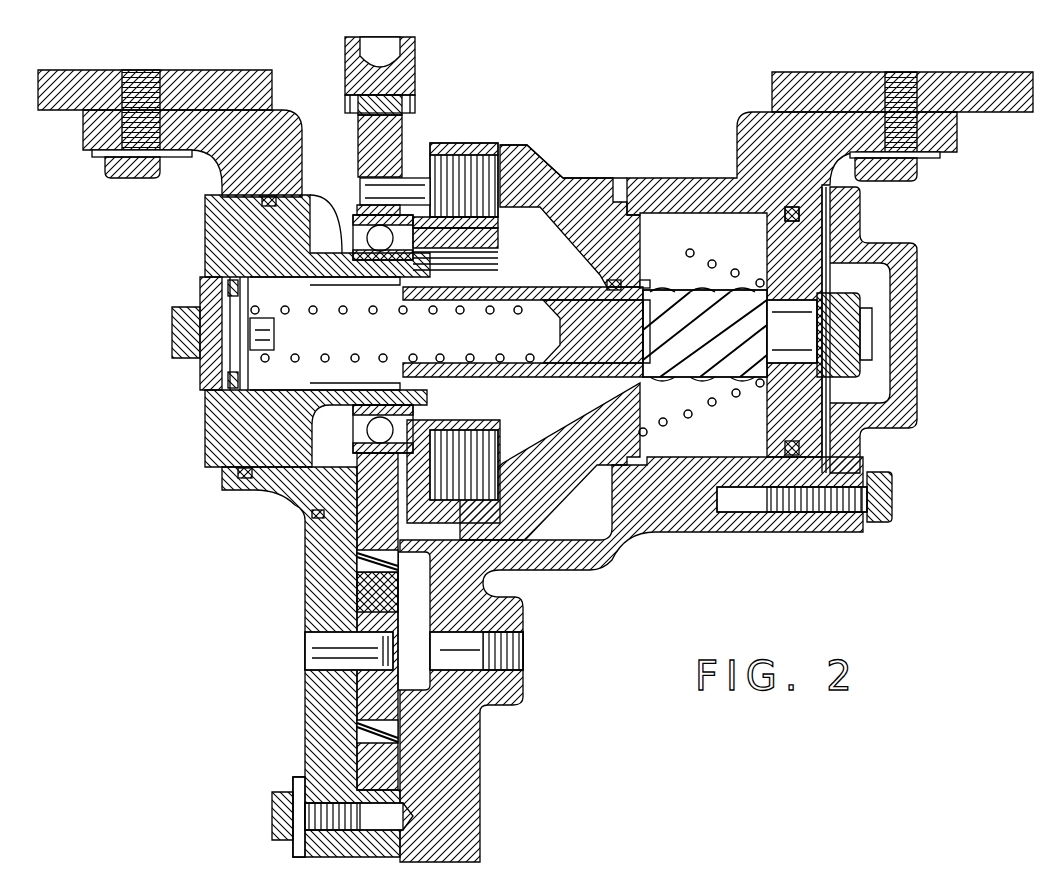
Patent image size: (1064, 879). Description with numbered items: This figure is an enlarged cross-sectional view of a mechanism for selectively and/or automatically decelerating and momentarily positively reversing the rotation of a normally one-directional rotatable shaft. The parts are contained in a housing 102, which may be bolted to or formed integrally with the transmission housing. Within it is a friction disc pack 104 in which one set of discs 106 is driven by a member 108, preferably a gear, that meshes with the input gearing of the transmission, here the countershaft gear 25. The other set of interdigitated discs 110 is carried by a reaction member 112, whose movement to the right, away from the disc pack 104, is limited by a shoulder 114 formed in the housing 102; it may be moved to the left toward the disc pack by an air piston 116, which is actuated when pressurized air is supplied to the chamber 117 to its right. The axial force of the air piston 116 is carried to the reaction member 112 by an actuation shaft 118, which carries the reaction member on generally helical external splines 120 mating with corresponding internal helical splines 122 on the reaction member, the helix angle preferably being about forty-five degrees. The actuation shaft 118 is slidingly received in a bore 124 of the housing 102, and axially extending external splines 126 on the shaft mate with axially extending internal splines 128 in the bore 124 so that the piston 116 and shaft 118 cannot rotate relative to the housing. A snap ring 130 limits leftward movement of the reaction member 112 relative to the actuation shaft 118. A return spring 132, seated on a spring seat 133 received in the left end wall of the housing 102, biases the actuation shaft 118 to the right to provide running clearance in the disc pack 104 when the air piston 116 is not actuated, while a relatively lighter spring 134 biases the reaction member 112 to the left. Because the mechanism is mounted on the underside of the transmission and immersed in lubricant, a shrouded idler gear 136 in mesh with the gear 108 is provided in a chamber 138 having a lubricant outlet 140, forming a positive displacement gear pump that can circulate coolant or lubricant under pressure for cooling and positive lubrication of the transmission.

The countershaft gear 25 is at (415, 82).
The housing 102 is at (563, 572).
The friction disc pack 104 is at (500, 176).
The discs 106 is at (497, 222).
The member 108 is at (400, 155).
The interdigitated discs 110 is at (490, 165).
The reaction member 112 is at (556, 175).
The shoulder 114 is at (620, 178).
The air piston 116 is at (782, 205).
The chamber 117 is at (815, 276).
The actuation shaft 118 is at (580, 355).
The helical external splines 120 is at (710, 378).
The internal helical splines 122 is at (643, 292).
The bore 124 is at (262, 270).
The axially extending external splines 126 is at (423, 252).
The axially extending internal splines 128 is at (332, 286).
The snap ring 130 is at (607, 283).
The return spring 132 is at (346, 312).
The spring seat 133 is at (200, 295).
The spring 134 is at (680, 230).
The shrouded idler gear 136 is at (325, 592).
The chamber 138 is at (428, 580).
The lubricant outlet 140 is at (512, 660).